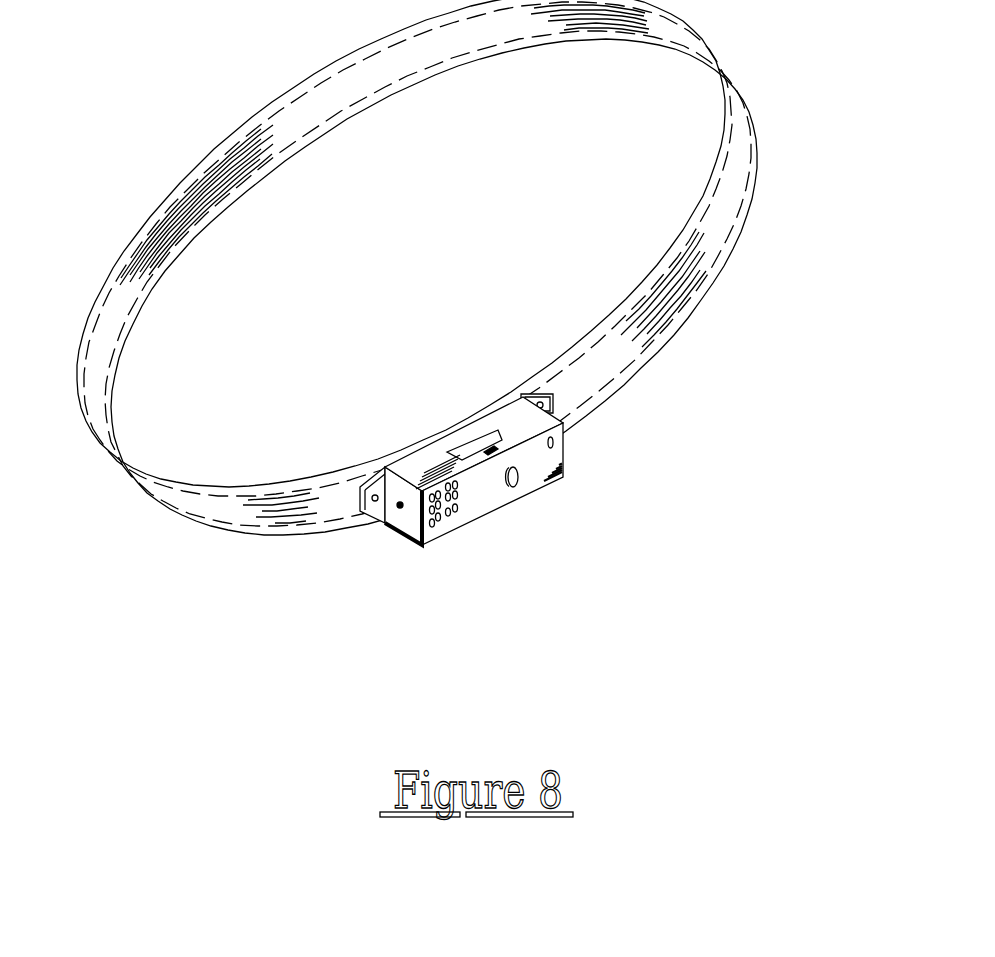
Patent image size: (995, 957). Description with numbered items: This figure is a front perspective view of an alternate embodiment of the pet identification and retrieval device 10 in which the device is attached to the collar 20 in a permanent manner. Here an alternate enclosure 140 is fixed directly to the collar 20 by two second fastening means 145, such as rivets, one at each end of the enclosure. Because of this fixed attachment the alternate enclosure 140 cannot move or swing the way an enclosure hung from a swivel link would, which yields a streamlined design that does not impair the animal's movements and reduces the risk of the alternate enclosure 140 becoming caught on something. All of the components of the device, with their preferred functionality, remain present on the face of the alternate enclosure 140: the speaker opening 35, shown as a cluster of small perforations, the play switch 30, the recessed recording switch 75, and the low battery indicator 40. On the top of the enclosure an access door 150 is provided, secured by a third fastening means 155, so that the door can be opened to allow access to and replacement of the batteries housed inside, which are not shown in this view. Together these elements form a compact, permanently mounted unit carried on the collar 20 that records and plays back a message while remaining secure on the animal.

The pet identification and retrieval device 10 is at (180, 596).
The collar 20 is at (650, 316).
The play switch 30 is at (518, 482).
The speaker opening 35 is at (453, 514).
The low battery indicator 40 is at (556, 440).
The recessed recording switch 75 is at (400, 508).
The alternate enclosure 140 is at (540, 462).
The second fastening means 145 is at (555, 400).
The access door 150 is at (469, 443).
The third fastening means 155 is at (488, 450).